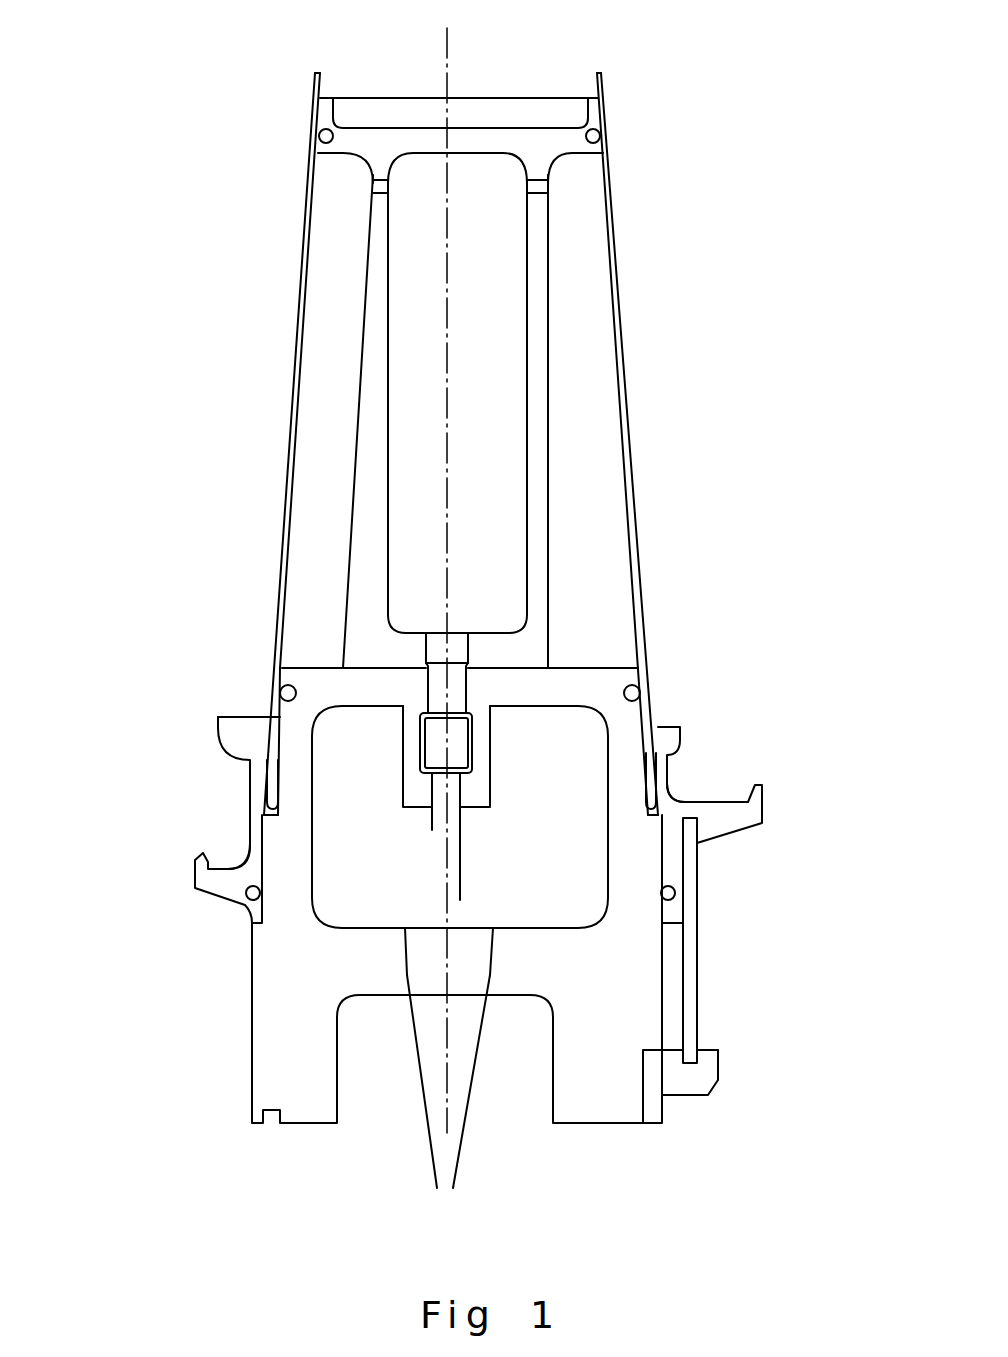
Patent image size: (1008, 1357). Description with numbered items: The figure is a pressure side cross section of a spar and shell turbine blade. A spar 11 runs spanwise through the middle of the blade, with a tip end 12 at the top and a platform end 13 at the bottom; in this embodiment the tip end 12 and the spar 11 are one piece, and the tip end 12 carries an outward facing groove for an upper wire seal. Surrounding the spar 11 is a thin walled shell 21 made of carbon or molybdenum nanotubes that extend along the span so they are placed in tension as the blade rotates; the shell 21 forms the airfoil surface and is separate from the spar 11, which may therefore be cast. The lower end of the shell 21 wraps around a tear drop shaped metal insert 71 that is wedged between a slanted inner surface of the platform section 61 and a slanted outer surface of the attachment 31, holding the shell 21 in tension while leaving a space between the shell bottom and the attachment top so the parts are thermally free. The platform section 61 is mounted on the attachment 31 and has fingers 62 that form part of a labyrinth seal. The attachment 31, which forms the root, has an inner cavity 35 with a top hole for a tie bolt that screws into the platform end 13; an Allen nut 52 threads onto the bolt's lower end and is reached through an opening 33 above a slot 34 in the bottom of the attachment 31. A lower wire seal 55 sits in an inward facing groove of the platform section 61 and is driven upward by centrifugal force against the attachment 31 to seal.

The spar 11 is at (535, 432).
The tip end 12 is at (490, 147).
The platform end 13 is at (483, 650).
The shell 21 is at (620, 287).
The attachment 31 is at (597, 966).
The opening 33 is at (453, 1188).
The slot 34 is at (437, 1188).
The inner cavity 35 is at (553, 843).
The Allen nut 52 is at (475, 792).
The lower wire seal 55 is at (245, 902).
The platform section 61 is at (240, 875).
The fingers 62 is at (762, 795).
The metal insert 71 is at (270, 807).